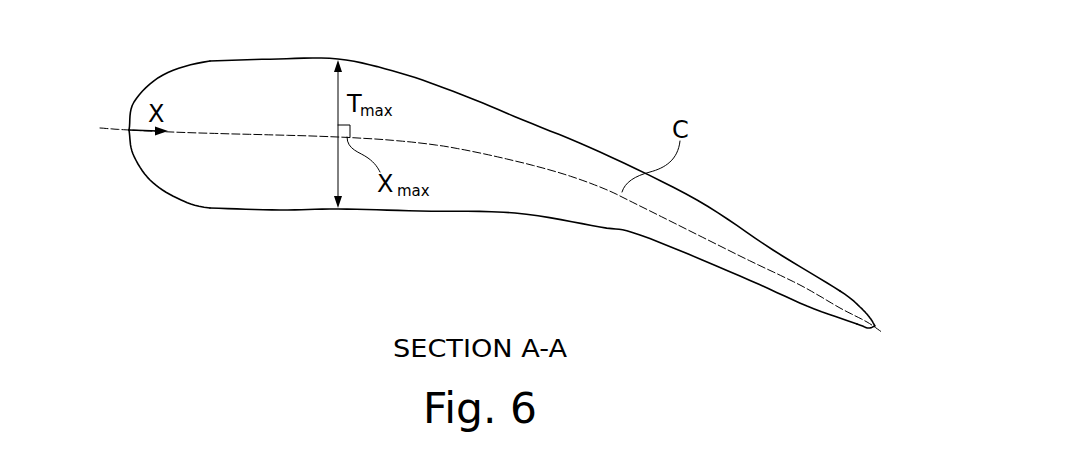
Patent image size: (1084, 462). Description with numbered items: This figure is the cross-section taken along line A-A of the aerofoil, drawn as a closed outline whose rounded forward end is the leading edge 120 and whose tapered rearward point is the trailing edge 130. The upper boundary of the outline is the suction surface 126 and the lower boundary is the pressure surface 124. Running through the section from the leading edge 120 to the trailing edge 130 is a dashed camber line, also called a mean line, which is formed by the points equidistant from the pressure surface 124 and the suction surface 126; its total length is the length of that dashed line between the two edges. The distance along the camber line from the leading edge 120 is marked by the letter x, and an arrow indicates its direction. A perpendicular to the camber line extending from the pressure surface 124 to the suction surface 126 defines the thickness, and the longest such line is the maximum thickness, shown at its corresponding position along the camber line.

The leading edge 120 is at (129, 130).
The pressure surface 124 is at (515, 213).
The suction surface 126 is at (523, 118).
The trailing edge 130 is at (876, 326).